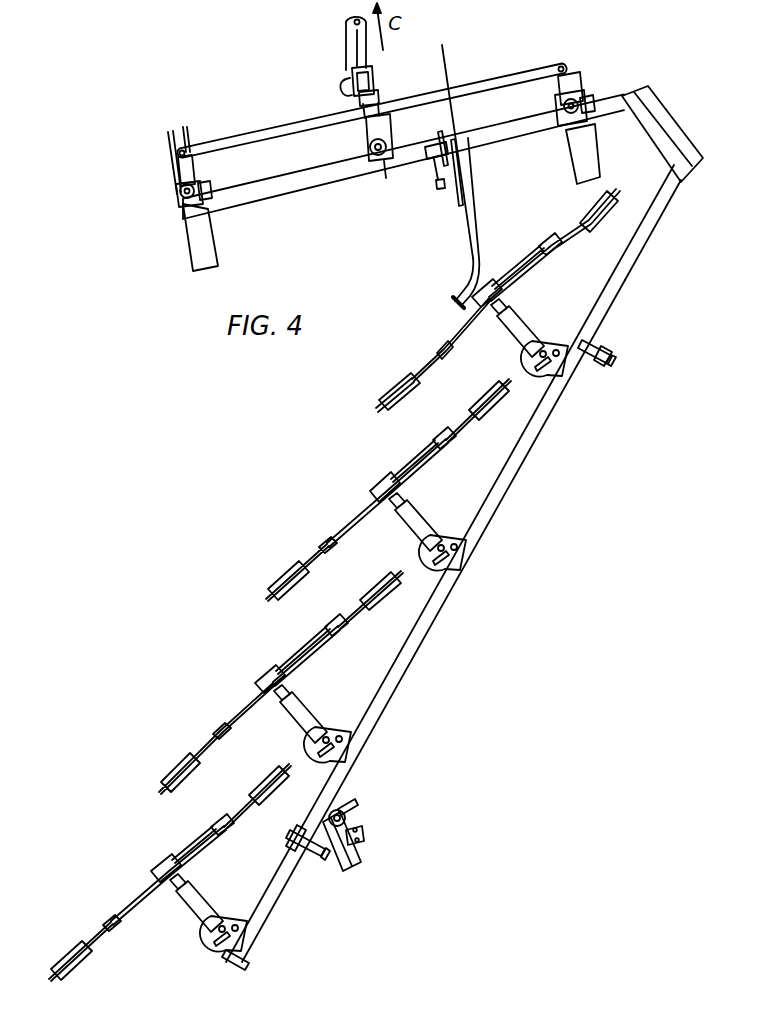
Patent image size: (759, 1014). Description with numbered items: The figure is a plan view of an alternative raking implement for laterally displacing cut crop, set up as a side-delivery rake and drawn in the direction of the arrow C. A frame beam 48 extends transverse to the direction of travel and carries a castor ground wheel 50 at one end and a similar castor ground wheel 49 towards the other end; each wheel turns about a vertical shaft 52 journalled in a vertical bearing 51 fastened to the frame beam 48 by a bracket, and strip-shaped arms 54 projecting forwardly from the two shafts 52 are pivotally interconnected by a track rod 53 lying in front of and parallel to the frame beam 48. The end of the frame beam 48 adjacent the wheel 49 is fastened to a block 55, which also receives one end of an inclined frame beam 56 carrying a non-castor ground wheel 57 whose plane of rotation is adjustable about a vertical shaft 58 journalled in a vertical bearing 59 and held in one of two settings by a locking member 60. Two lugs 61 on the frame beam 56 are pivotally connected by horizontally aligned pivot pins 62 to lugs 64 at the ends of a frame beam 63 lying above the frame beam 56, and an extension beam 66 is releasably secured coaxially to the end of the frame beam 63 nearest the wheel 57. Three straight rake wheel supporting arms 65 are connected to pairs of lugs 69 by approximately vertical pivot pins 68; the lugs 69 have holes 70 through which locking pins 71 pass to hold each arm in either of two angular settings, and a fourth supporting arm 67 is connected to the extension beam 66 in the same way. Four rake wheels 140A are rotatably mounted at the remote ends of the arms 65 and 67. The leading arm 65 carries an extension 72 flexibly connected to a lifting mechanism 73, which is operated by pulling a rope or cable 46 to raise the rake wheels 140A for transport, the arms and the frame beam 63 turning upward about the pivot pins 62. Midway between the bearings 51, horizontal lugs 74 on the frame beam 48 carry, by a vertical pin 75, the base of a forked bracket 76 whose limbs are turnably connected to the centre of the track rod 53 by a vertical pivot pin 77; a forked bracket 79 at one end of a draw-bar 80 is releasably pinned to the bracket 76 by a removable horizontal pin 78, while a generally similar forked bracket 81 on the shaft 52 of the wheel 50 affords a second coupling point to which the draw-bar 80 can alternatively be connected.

The rope, cable or the like 46 is at (448, 52).
The frame beam 48 is at (272, 206).
The castor ground wheel 49 is at (601, 170).
The castor ground wheel 50 is at (196, 234).
The vertical bearing 51 is at (196, 202).
The vertical shaft 52 is at (180, 192).
The track rod 53 is at (483, 88).
The strip-shaped arm 54 is at (178, 165).
The block 55 is at (641, 92).
The frame beam 56 is at (648, 240).
The ground wheel 57 is at (356, 801).
The vertical shaft 58 is at (318, 813).
The vertical bearing 59 is at (348, 816).
The locking member 60 is at (366, 852).
The lug 61 is at (598, 362).
The pivot pin 62 is at (622, 350).
The frame beam 63 is at (512, 462).
The lug 64 is at (610, 344).
The rake wheel supporting arm 65 is at (514, 326).
The extension beam 66 is at (248, 958).
The rake wheel supporting arm 67 is at (196, 890).
The pivot pin 68 is at (544, 351).
The lug 69 is at (567, 377).
The hole 70 is at (557, 350).
The locking pin 71 is at (540, 371).
The extension 72 is at (488, 276).
The lifting mechanism 73 is at (436, 186).
The horizontal lug 74 is at (384, 174).
The vertical pin 75 is at (366, 150).
The forked bracket 76 is at (393, 140).
The vertical pivot pin 77 is at (384, 97).
The removable horizontal pin 78 is at (341, 89).
The forked bracket 79 is at (372, 76).
The draw-bar 80 is at (347, 40).
The forked bracket 81 is at (184, 130).
The rake wheel 140A is at (448, 372).